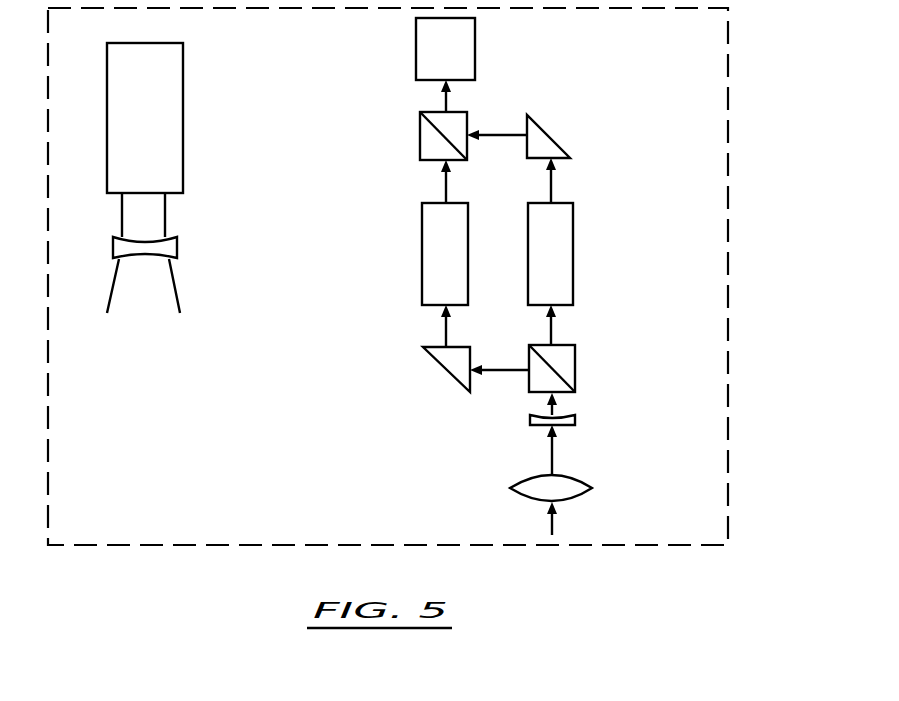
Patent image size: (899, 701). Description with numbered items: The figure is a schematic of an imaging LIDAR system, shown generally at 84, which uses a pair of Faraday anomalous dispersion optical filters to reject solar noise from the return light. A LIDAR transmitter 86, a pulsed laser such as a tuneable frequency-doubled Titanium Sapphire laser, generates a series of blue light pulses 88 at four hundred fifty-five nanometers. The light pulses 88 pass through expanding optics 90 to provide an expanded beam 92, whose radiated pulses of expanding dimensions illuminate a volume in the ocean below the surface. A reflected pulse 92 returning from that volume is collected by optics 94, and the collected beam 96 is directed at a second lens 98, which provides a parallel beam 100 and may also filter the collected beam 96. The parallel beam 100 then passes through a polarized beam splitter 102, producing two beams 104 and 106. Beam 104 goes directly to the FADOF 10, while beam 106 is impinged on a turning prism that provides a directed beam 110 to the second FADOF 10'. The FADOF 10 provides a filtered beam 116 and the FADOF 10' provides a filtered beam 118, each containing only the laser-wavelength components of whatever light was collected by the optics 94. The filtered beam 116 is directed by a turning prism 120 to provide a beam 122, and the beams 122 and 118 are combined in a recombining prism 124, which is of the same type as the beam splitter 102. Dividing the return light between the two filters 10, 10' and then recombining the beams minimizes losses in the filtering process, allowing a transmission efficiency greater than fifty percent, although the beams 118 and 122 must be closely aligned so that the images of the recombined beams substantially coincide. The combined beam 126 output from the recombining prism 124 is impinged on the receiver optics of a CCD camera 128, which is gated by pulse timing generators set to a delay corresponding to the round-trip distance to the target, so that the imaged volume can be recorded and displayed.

The LIDAR imaging system 84 is at (734, 59).
The LIDAR transmitter 86 is at (183, 126).
The blue light pulses 88 is at (165, 216).
The expanding optics 90 is at (173, 250).
The expanded beam 92 is at (168, 288).
The collecting optics 94 is at (585, 483).
The collected beam 96 is at (558, 455).
The second lens 98 is at (530, 421).
The parallel beam 100 is at (560, 410).
The polarized beam splitter 102 is at (575, 375).
The first split beam 104 is at (554, 332).
The second split beam 106 is at (508, 370).
The FADOF 10 is at (580, 254).
The second FADOF 10' is at (415, 254).
The directed beam 110 is at (444, 330).
The filtered beam 116 is at (554, 188).
The second filtered beam 118 is at (444, 186).
The turning prism 120 is at (545, 127).
The redirected filtered beam 122 is at (497, 135).
The recombining prism 124 is at (420, 130).
The combined beam 126 is at (443, 96).
The CCD camera 128 is at (475, 48).